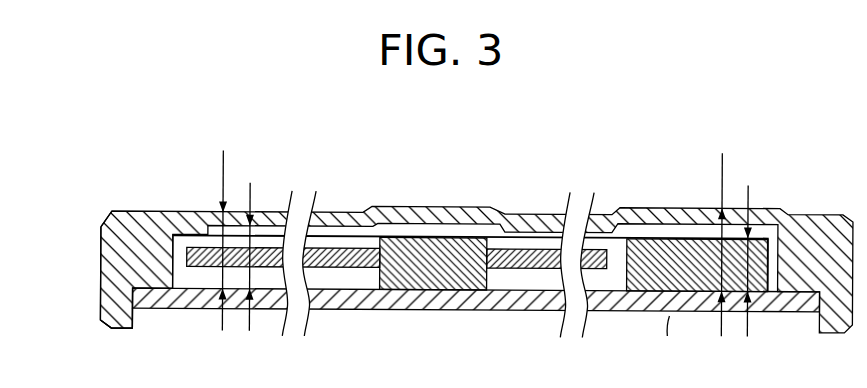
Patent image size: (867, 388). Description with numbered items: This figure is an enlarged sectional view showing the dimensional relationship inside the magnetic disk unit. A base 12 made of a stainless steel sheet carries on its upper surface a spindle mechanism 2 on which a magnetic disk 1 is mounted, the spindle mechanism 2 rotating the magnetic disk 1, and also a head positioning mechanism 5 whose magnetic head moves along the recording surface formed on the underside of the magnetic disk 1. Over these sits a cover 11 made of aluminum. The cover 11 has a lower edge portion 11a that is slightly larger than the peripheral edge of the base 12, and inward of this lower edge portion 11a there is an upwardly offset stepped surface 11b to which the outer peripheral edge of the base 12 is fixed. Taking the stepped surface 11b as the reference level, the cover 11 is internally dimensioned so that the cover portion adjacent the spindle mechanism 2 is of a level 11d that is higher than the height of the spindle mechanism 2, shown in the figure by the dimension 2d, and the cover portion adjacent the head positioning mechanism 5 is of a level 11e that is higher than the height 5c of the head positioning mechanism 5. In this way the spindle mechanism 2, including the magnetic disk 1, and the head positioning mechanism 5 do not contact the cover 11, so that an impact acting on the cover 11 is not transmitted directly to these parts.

The magnetic disk 1 is at (335, 258).
The spindle mechanism 2 is at (409, 244).
The height of component clearance 2d is at (256, 241).
The head positioning mechanism 5 is at (648, 244).
The height of the head positioning mechanism 5c is at (756, 243).
The cover 11 is at (489, 204).
The lower edge portion 11a is at (103, 279).
The stepped surface 11b is at (159, 310).
The level of the cover portion adjacent the spindle mechanism 11d is at (222, 224).
The level of the cover portion adjacent the head positioning mechanism 11e is at (720, 228).
The base 12 is at (479, 309).